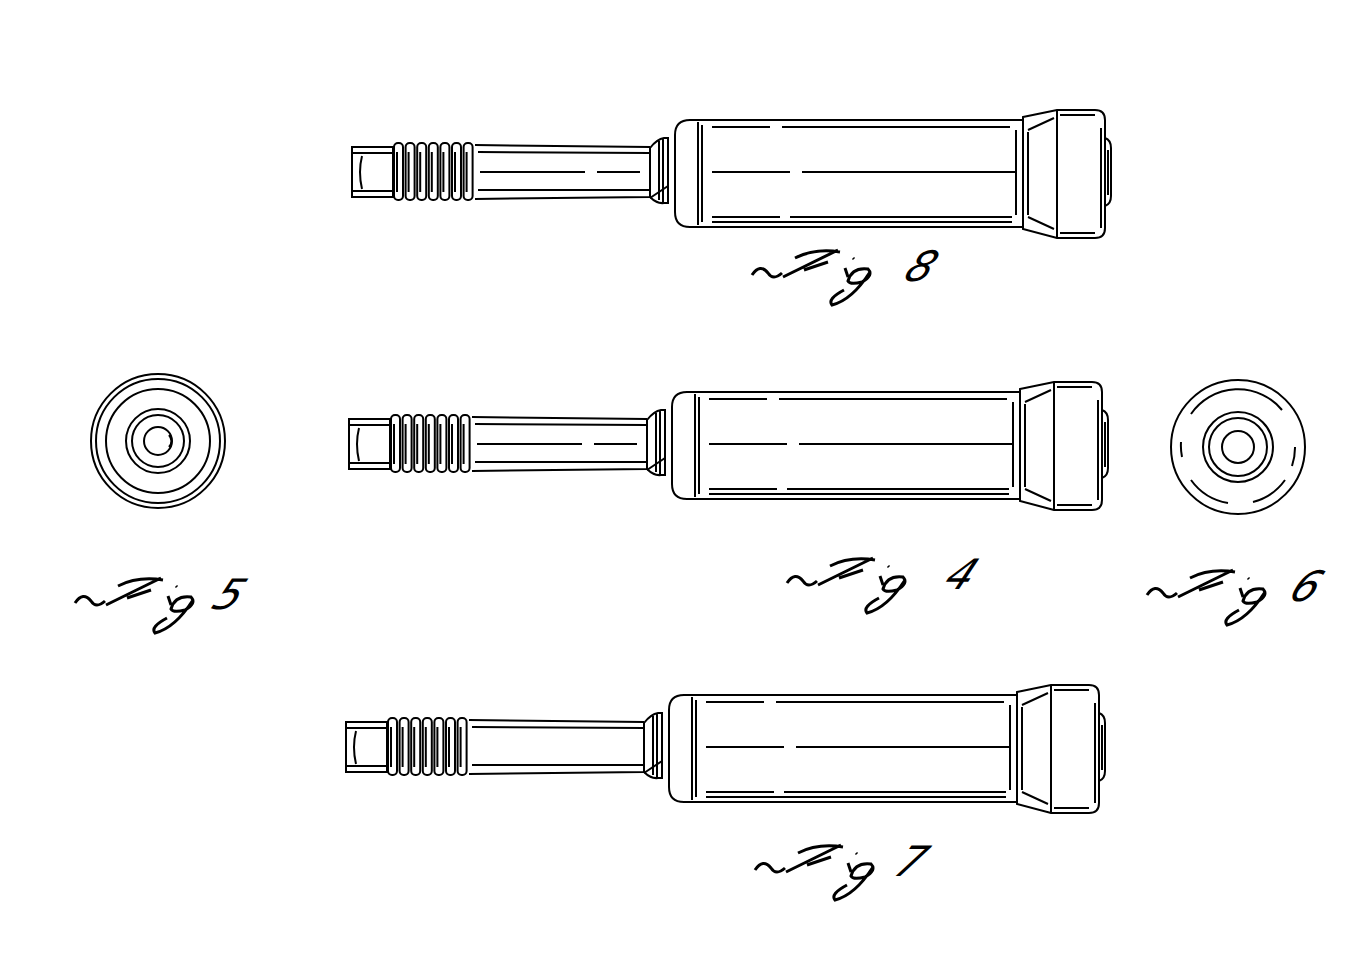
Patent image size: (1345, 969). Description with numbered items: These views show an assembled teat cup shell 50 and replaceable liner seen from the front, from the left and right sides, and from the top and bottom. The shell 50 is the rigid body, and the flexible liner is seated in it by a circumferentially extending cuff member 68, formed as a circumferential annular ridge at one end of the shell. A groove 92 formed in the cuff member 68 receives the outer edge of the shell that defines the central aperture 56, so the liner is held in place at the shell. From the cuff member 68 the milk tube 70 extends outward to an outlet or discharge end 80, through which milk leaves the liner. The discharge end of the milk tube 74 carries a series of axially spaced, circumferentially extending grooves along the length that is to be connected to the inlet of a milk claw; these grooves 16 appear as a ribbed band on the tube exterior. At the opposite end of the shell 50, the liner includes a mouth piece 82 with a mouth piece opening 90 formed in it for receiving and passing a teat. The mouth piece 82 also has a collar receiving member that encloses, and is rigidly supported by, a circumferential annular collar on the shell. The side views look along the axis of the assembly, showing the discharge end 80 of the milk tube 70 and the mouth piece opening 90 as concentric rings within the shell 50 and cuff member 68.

In FIG. 8, the thread grooves 16 is at (416, 200).
In FIG. 4, the thread grooves 16 is at (424, 473).
In FIG. 7, the thread grooves 16 is at (412, 778).
In FIG. 5, the thread grooves 16 is at (162, 470).
In FIG. 8, the teat cup shell 50 is at (810, 120).
In FIG. 4, the teat cup shell 50 is at (850, 392).
In FIG. 7, the teat cup shell 50 is at (830, 695).
In FIG. 5, the teat cup shell 50 is at (140, 385).
In FIG. 8, the central aperture 56 is at (664, 136).
In FIG. 4, the central aperture 56 is at (662, 470).
In FIG. 7, the central aperture 56 is at (662, 783).
In FIG. 8, the cuff member 68 is at (676, 205).
In FIG. 4, the cuff member 68 is at (670, 395).
In FIG. 7, the cuff member 68 is at (660, 718).
In FIG. 5, the cuff member 68 is at (173, 413).
In FIG. 8, the milk tube 70 is at (522, 143).
In FIG. 4, the milk tube 70 is at (508, 415).
In FIG. 7, the milk tube 70 is at (517, 720).
In FIG. 8, the milk tube 74 is at (472, 200).
In FIG. 4, the milk tube 74 is at (468, 473).
In FIG. 7, the milk tube 74 is at (465, 778).
In FIG. 8, the discharge end 80 is at (357, 170).
In FIG. 4, the discharge end 80 is at (352, 455).
In FIG. 7, the discharge end 80 is at (358, 735).
In FIG. 5, the discharge end 80 is at (170, 440).
In FIG. 8, the mouth piece 82 is at (1110, 118).
In FIG. 4, the mouth piece 82 is at (1100, 385).
In FIG. 7, the mouth piece 82 is at (1100, 690).
In FIG. 5, the mouth piece 82 is at (103, 403).
In FIG. 6, the mouth piece 82 is at (1258, 393).
In FIG. 8, the mouth piece opening 90 is at (1115, 165).
In FIG. 4, the mouth piece opening 90 is at (1108, 430).
In FIG. 7, the mouth piece opening 90 is at (1106, 748).
In FIG. 6, the mouth piece opening 90 is at (1257, 437).
In FIG. 8, the groove 92 is at (650, 192).
In FIG. 4, the groove 92 is at (666, 440).
In FIG. 7, the groove 92 is at (660, 743).